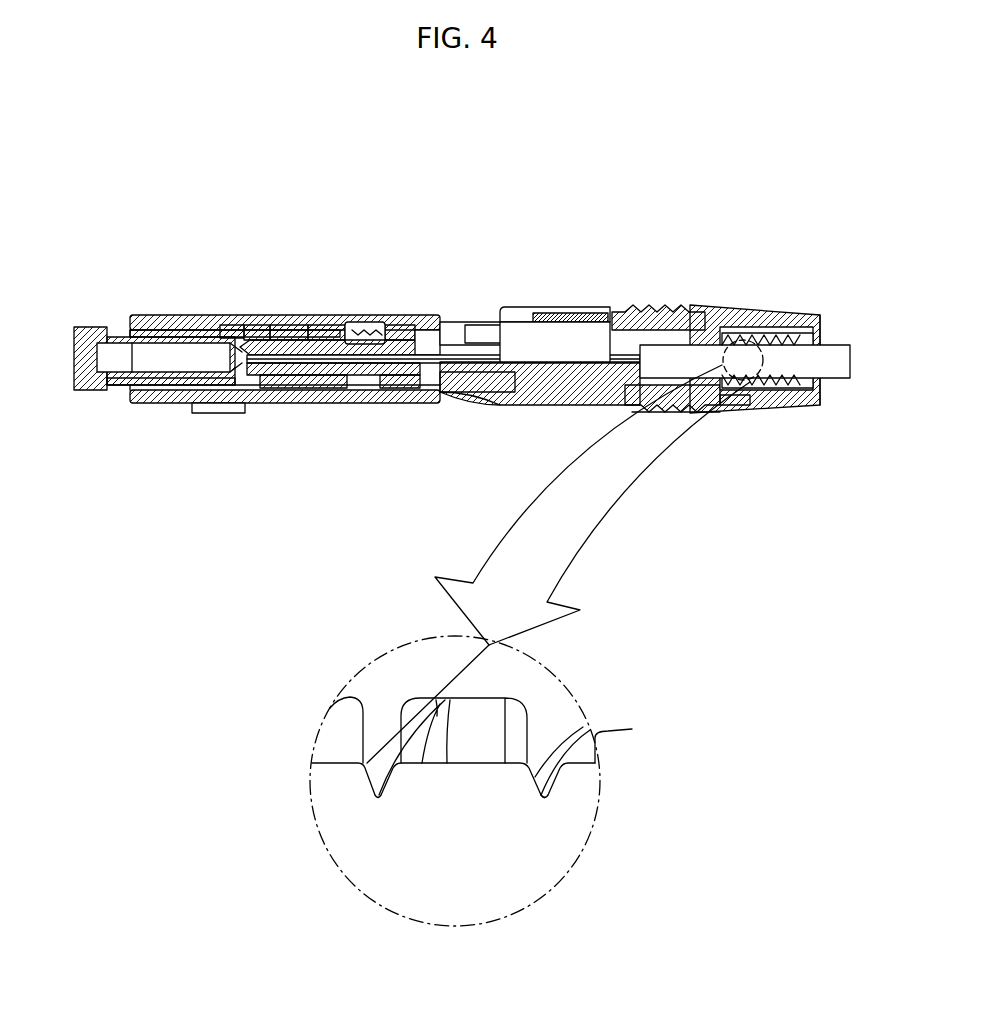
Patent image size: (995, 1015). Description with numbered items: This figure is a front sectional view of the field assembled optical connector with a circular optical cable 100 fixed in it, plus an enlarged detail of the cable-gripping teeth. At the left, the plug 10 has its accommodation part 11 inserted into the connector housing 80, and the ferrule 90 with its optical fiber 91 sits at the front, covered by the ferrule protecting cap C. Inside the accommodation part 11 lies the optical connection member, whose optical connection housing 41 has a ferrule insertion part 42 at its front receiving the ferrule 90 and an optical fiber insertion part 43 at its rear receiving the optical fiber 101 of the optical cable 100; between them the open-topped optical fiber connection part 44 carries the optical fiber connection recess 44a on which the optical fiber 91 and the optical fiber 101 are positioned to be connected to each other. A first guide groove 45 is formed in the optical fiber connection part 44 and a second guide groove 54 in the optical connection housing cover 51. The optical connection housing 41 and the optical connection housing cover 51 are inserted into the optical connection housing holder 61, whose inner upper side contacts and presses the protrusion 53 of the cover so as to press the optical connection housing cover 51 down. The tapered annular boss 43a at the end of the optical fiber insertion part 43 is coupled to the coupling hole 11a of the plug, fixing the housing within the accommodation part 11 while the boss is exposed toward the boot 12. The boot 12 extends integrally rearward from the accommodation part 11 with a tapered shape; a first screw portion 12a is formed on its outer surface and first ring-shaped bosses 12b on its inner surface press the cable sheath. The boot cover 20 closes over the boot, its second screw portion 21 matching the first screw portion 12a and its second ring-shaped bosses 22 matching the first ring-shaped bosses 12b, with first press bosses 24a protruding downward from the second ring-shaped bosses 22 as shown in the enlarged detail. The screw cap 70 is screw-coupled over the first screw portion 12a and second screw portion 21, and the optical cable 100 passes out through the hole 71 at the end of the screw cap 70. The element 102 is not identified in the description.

The plug 10 is at (160, 318).
The connector housing 80 is at (178, 313).
The ferrule insertion part 42 is at (221, 325).
The second guide groove 54 is at (250, 325).
The optical connection housing cover 51 is at (262, 325).
The optical connection housing holder 61 is at (302, 325).
The optical connection housing 41 is at (322, 325).
The protrusion 53 is at (348, 322).
The optical fiber of the optical cable 101 is at (427, 330).
The optical fiber insertion part 43 is at (470, 322).
The tapered annular boss 43a is at (517, 322).
The boot cover 20 is at (593, 307).
The second screw portion 21 is at (655, 305).
The second ring-shaped bosses 22 is at (744, 325).
The screw cap 70 is at (797, 305).
The hole 71 is at (835, 318).
The ferrule protecting cap C is at (80, 392).
The ferrule 90 is at (213, 412).
The optical fiber of the ferrule 91 is at (240, 412).
The first guide groove 45 is at (255, 410).
The optical fiber connection recess 44a is at (290, 404).
The optical fiber connection part 44 is at (342, 404).
The accommodation part 11 is at (462, 410).
The coupling hole 11a is at (505, 406).
The first screw portion 12a is at (655, 416).
The boot 12 is at (723, 412).
The first ring-shaped bosses 12b is at (745, 410).
The inner sleeve of cone 102 is at (793, 408).
The optical cable 100 is at (838, 385).
The first press bosses 24a is at (377, 797).